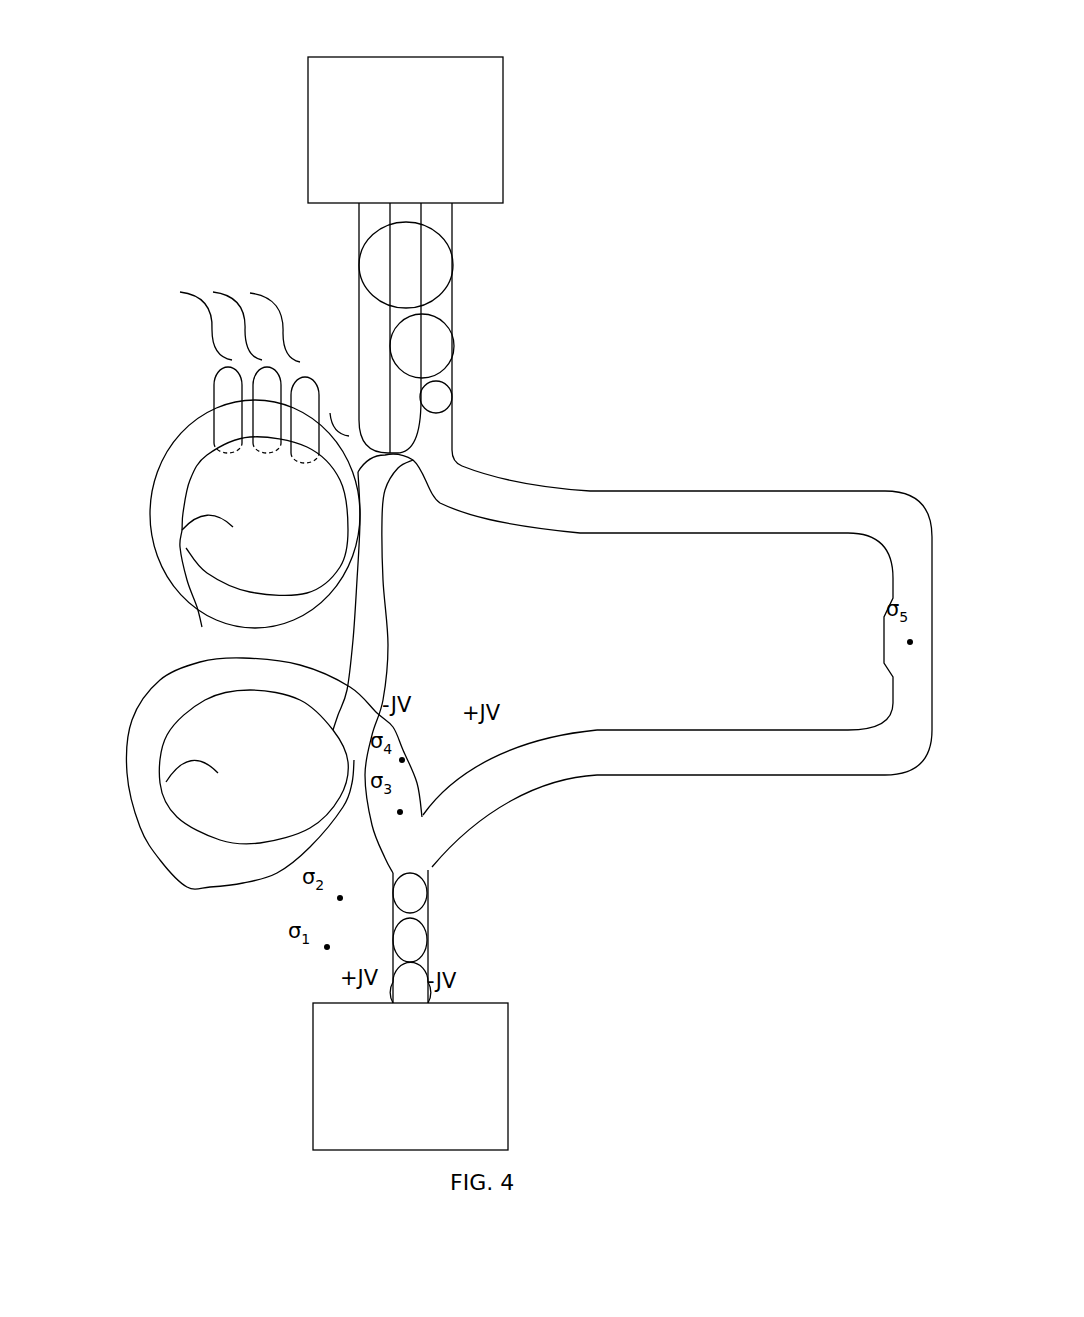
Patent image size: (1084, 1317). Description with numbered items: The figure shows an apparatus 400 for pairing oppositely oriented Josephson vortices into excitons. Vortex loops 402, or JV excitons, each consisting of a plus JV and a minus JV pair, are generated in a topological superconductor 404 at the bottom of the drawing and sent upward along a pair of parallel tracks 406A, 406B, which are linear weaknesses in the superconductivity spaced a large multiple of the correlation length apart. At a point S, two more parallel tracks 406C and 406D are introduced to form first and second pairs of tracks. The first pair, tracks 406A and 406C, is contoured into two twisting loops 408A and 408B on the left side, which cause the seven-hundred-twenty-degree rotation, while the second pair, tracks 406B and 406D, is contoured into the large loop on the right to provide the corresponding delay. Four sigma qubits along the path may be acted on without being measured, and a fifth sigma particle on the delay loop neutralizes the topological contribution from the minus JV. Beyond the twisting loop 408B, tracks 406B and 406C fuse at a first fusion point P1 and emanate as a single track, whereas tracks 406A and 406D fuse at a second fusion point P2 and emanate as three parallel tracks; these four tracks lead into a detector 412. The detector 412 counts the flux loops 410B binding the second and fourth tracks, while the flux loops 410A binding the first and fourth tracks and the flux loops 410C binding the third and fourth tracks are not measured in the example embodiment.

The microfluidic droplet system 400 is at (497, 31).
The vortex loops 402 is at (498, 970).
The topological SC 404 is at (498, 1068).
The track 406A is at (372, 796).
The track 406B is at (596, 768).
The track 406C is at (408, 738).
The track 406D is at (637, 718).
The twisting loop 408A is at (183, 878).
The twisting loop 408B is at (202, 620).
The flux loops 410A is at (430, 263).
The flux loops 410B is at (430, 345).
The flux loops 410C is at (440, 387).
The detector 412 is at (447, 132).
The first fusion point P1 is at (443, 438).
The second fusion point P2 is at (335, 409).
The point S is at (423, 815).